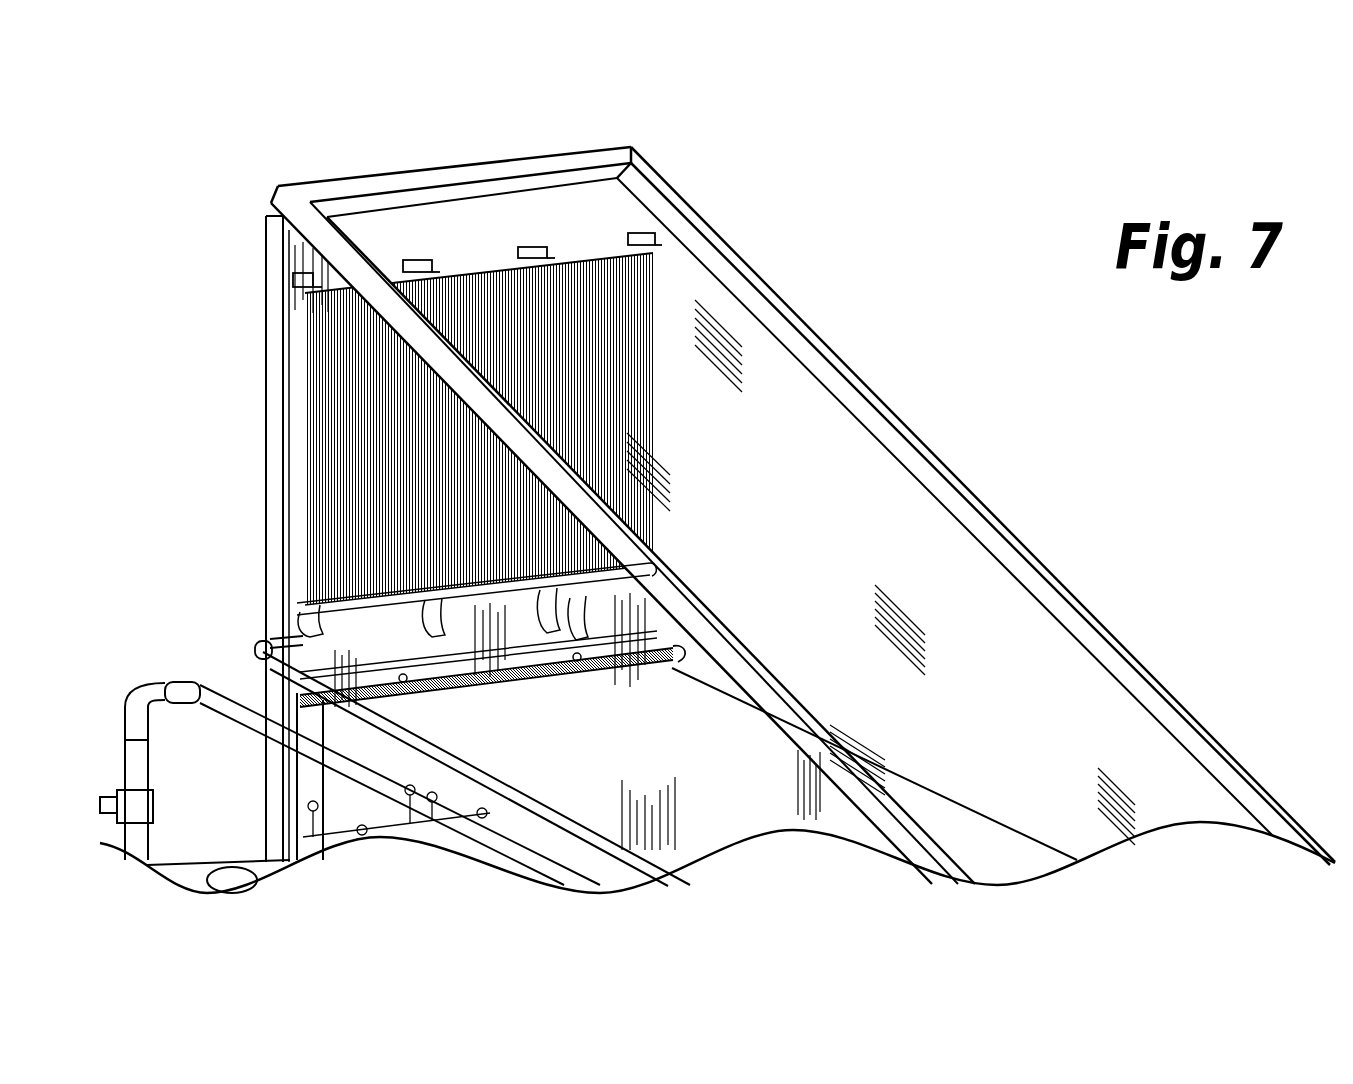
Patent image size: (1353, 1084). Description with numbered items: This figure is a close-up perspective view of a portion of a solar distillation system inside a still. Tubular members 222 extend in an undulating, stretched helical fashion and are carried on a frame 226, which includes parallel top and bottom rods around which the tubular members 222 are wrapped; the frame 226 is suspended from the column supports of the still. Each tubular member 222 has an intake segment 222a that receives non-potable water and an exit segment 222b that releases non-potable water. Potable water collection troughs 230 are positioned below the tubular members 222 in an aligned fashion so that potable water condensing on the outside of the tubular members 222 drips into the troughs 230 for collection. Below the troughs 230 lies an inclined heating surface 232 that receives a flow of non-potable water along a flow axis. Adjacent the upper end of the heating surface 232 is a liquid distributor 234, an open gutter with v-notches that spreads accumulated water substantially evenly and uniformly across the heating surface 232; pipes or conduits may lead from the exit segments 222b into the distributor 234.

The tubular members 222 is at (600, 250).
The intake segment 222a is at (260, 650).
The exit segment 222b is at (385, 686).
The frame 226 is at (305, 627).
The potable water collection troughs 230 is at (574, 652).
The heating surface 232 is at (755, 800).
The liquid distributor 234 is at (672, 652).